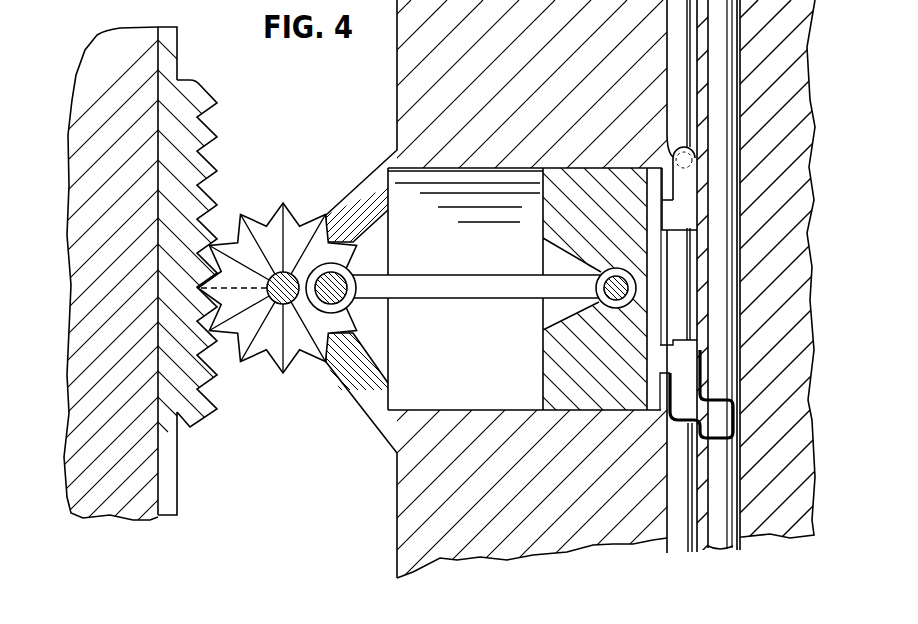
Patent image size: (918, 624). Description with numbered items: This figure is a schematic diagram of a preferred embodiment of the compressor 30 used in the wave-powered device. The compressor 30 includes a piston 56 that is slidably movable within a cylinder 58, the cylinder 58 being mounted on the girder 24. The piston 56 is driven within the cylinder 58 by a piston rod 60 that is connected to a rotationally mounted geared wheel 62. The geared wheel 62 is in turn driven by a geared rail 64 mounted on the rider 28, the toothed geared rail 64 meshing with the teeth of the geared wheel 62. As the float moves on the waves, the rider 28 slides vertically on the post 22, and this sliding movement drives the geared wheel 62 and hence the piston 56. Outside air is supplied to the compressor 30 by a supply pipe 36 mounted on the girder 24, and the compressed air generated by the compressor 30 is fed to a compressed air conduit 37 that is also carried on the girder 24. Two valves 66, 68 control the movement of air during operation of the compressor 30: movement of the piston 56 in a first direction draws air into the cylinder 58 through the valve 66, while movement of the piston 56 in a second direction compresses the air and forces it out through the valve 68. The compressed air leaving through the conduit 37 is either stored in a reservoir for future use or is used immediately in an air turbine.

The post 22 is at (80, 86).
The girder 24 is at (397, 90).
The rider 28 is at (173, 62).
The compressor 30 is at (533, 167).
The supply pipe 36 is at (680, 70).
The compressed air conduit 37 is at (738, 143).
The piston 56 is at (543, 372).
The cylinder 58 is at (486, 180).
The piston rod 60 is at (458, 276).
The geared wheel 62 is at (288, 354).
The geared rail 64 is at (197, 415).
The valve 66 is at (660, 213).
The valve 68 is at (690, 350).